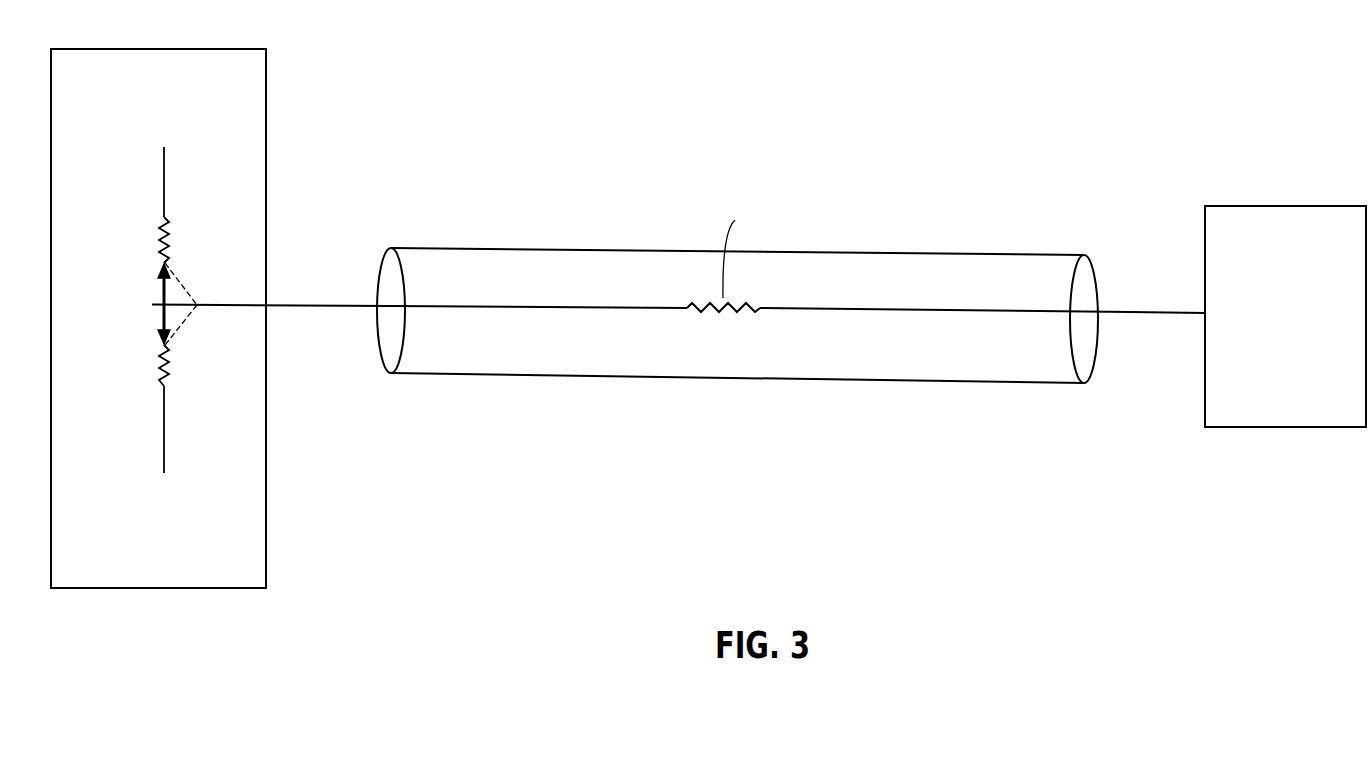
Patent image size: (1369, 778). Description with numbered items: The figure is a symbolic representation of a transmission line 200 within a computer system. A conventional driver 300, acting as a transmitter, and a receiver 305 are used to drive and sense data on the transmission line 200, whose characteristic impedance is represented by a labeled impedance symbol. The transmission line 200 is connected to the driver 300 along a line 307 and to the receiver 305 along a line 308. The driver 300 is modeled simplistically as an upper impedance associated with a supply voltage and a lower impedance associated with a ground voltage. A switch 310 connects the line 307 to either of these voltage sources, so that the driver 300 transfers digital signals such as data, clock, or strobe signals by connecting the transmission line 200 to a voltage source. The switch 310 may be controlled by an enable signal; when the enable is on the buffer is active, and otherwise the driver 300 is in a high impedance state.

The transmission line 200 is at (753, 291).
The driver 300 is at (158, 318).
The receiver 305 is at (1285, 316).
The line 307 is at (293, 304).
The line 308 is at (1129, 312).
The switch 310 is at (162, 297).